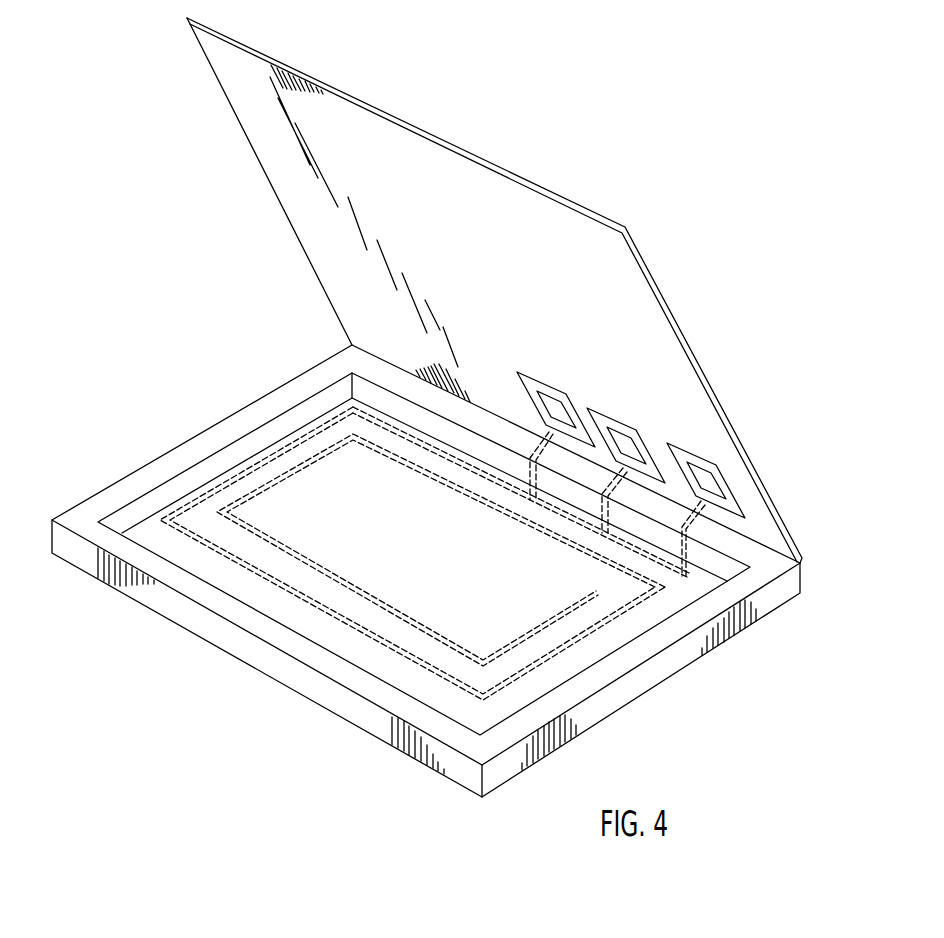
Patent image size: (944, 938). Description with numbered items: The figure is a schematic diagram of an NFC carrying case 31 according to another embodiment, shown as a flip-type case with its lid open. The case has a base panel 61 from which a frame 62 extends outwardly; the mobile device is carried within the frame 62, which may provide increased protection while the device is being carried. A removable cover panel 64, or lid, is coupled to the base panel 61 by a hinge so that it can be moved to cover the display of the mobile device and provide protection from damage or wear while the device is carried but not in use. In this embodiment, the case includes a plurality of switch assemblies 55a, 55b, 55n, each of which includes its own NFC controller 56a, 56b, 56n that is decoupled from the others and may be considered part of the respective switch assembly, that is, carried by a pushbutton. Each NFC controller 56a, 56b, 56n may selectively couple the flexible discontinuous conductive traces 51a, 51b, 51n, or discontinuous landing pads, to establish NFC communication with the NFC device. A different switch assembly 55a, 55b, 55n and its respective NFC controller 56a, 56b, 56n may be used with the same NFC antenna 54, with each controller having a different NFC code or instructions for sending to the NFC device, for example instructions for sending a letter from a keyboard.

The NFC carrying case 31 is at (249, 400).
The flexible discontinuous conductive trace 51a is at (555, 435).
The flexible discontinuous conductive trace 51b is at (636, 504).
The flexible discontinuous conductive trace 51n is at (710, 545).
The NFC antenna 54 is at (233, 478).
The switch assembly 55a is at (572, 398).
The switch assembly 55b is at (648, 448).
The switch assembly 55n is at (732, 492).
The NFC controller 56a is at (558, 403).
The NFC controller 56b is at (630, 447).
The NFC controller 56n is at (704, 478).
The base panel 61 is at (176, 625).
The frame 62 is at (88, 512).
The removable cover panel 64 is at (248, 142).